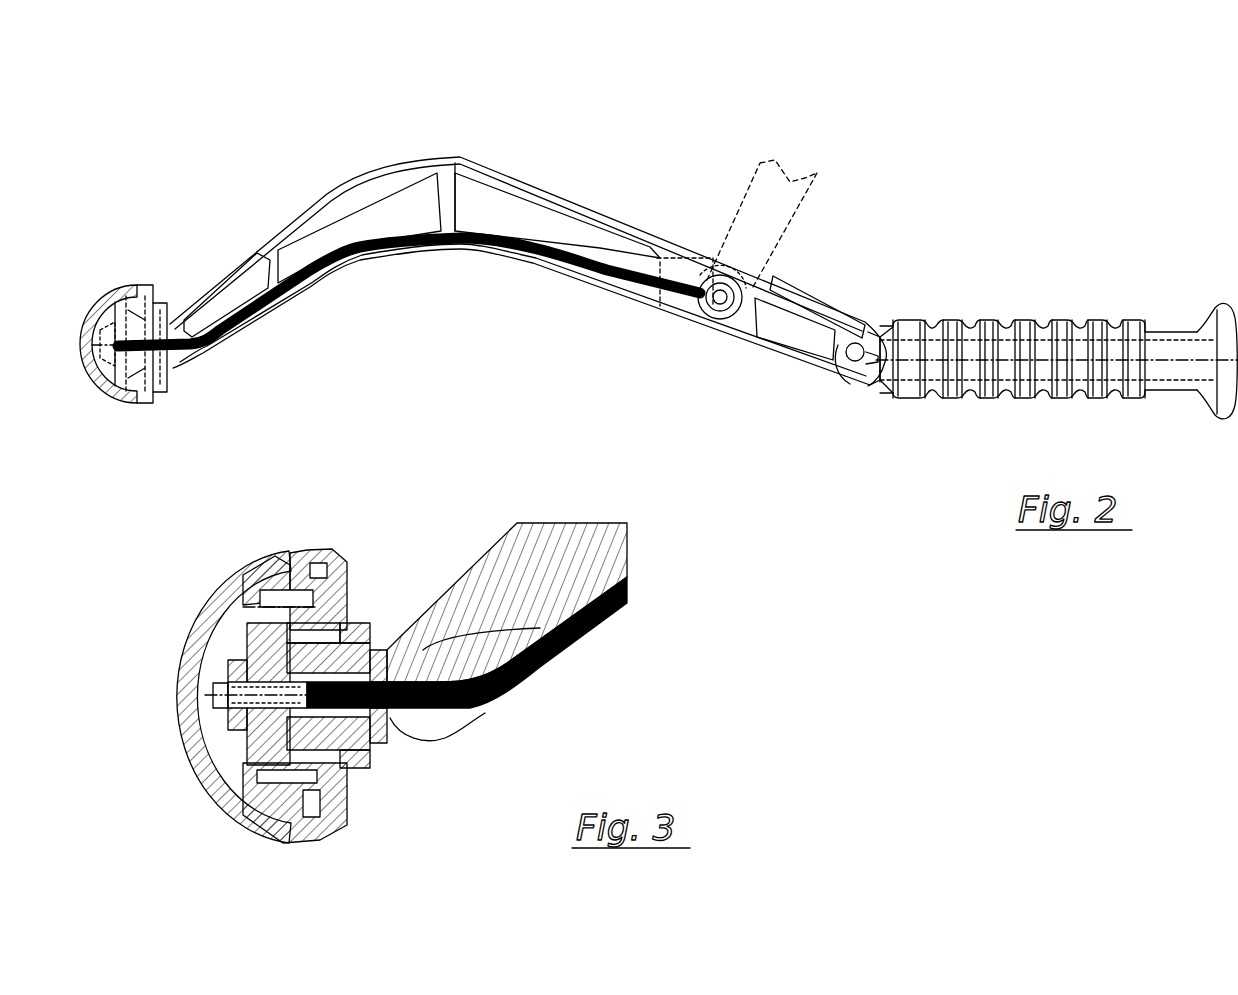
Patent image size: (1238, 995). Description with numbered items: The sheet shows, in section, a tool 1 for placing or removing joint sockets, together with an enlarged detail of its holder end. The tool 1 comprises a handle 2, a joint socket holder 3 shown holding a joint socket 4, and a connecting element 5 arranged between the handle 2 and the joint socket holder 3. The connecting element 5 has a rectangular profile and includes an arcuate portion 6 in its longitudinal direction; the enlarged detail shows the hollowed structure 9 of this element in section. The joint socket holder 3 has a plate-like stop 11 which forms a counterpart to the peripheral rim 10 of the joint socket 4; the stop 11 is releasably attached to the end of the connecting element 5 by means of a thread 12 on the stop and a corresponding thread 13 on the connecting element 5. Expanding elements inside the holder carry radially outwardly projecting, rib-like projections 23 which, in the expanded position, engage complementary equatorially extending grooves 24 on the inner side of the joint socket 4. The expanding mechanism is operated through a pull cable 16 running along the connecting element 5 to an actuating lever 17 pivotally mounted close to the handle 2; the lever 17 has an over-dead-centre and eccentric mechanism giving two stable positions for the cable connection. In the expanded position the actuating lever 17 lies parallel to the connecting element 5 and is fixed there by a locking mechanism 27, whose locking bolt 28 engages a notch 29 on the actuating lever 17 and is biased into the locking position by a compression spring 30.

In FIG. 2, the tool 1 is at (603, 72).
In FIG. 2, the handle 2 is at (1082, 318).
In FIG. 2, the joint socket holder 3 is at (158, 262).
In FIG. 3, the joint socket holder 3 is at (408, 796).
In FIG. 2, the joint socket 4 is at (112, 293).
In FIG. 3, the joint socket 4 is at (183, 768).
In FIG. 2, the connecting element 5 is at (656, 210).
In FIG. 2, the arcuate portion 6 is at (480, 160).
In FIG. 2, the reinforcing cutouts / ribs 9 is at (360, 208).
In FIG. 3, the peripheral rim 10 is at (322, 552).
In FIG. 3, the stop 11 is at (338, 560).
In FIG. 3, the thread 12 is at (332, 643).
In FIG. 3, the thread 13 is at (325, 740).
In FIG. 2, the pull cable 16 is at (535, 258).
In FIG. 3, the pull cable 16 is at (565, 655).
In FIG. 2, the actuating lever 17 is at (812, 178).
In FIG. 3, the projections 23 is at (287, 592).
In FIG. 3, the grooves 24 is at (283, 597).
In FIG. 2, the locking mechanism 27 is at (878, 322).
In FIG. 2, the locking bolt 28 is at (853, 364).
In FIG. 2, the notch 29 is at (830, 362).
In FIG. 2, the compression spring 30 is at (868, 366).